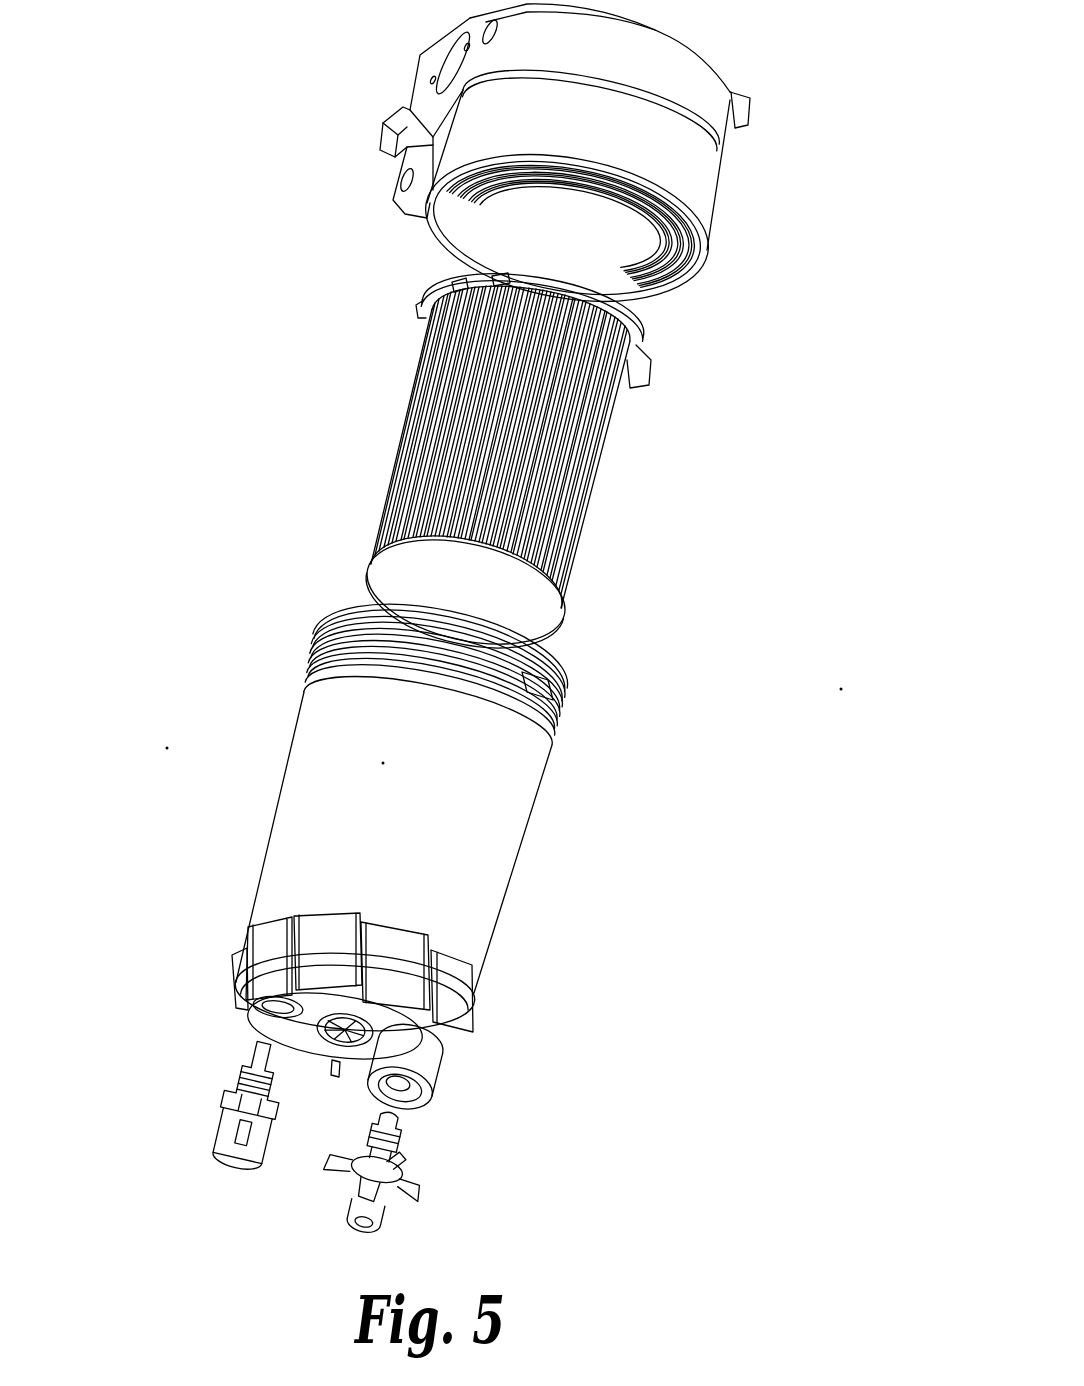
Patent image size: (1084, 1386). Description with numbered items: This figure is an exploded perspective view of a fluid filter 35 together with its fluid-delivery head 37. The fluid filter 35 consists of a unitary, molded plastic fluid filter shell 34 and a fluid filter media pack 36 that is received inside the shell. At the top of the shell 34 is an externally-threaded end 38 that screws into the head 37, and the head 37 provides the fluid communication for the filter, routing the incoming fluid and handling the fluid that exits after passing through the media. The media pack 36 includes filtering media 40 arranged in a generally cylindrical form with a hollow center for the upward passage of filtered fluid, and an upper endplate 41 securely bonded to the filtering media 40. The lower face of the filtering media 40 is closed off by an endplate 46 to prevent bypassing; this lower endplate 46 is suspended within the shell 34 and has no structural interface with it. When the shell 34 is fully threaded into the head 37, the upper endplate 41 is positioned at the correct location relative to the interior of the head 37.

The fluid filter shell 34 is at (492, 863).
The fluid filter 35 is at (317, 577).
The fluid filter media pack 36 is at (580, 468).
The head 37 is at (687, 193).
The externally-threaded end 38 is at (573, 700).
The filtering media 40 is at (433, 392).
The upper endplate 41 is at (627, 313).
The endplate 46 is at (535, 612).